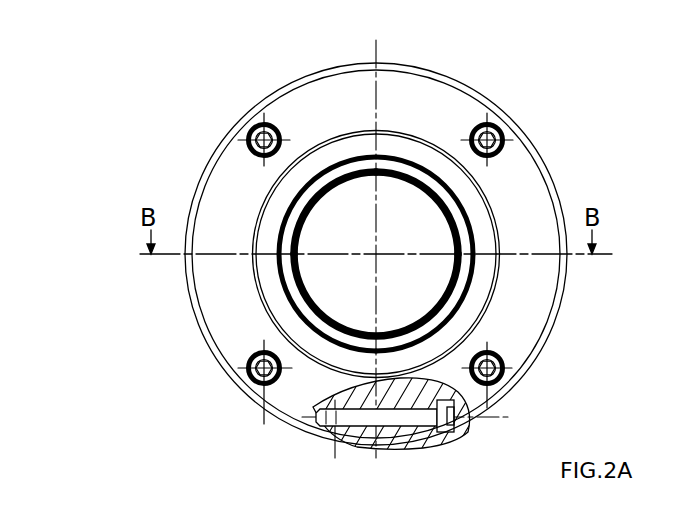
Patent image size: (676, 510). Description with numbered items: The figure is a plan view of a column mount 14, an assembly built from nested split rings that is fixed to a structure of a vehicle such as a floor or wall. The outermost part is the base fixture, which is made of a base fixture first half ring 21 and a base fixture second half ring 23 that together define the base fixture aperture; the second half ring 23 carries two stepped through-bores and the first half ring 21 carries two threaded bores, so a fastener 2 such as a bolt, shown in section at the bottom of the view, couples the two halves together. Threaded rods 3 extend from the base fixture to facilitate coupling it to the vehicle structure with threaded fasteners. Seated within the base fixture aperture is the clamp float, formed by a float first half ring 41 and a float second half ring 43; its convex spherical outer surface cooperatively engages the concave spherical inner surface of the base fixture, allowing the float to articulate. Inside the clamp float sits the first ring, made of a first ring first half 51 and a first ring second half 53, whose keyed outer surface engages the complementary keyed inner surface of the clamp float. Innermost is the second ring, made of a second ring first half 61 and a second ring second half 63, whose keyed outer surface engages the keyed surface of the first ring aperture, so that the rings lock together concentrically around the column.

The column mount 14 is at (500, 104).
The base fixture first half ring 21 is at (220, 217).
The float first half ring 41 is at (267, 238).
The fastener 2 is at (371, 330).
The float second half ring 43 is at (432, 350).
The threaded rod 3 is at (458, 322).
The first ring first half 51 is at (468, 284).
The second ring second half 63 is at (462, 243).
The base fixture second half ring 23 is at (512, 234).
The first ring second half 53 is at (408, 150).
The second ring first half 61 is at (290, 258).